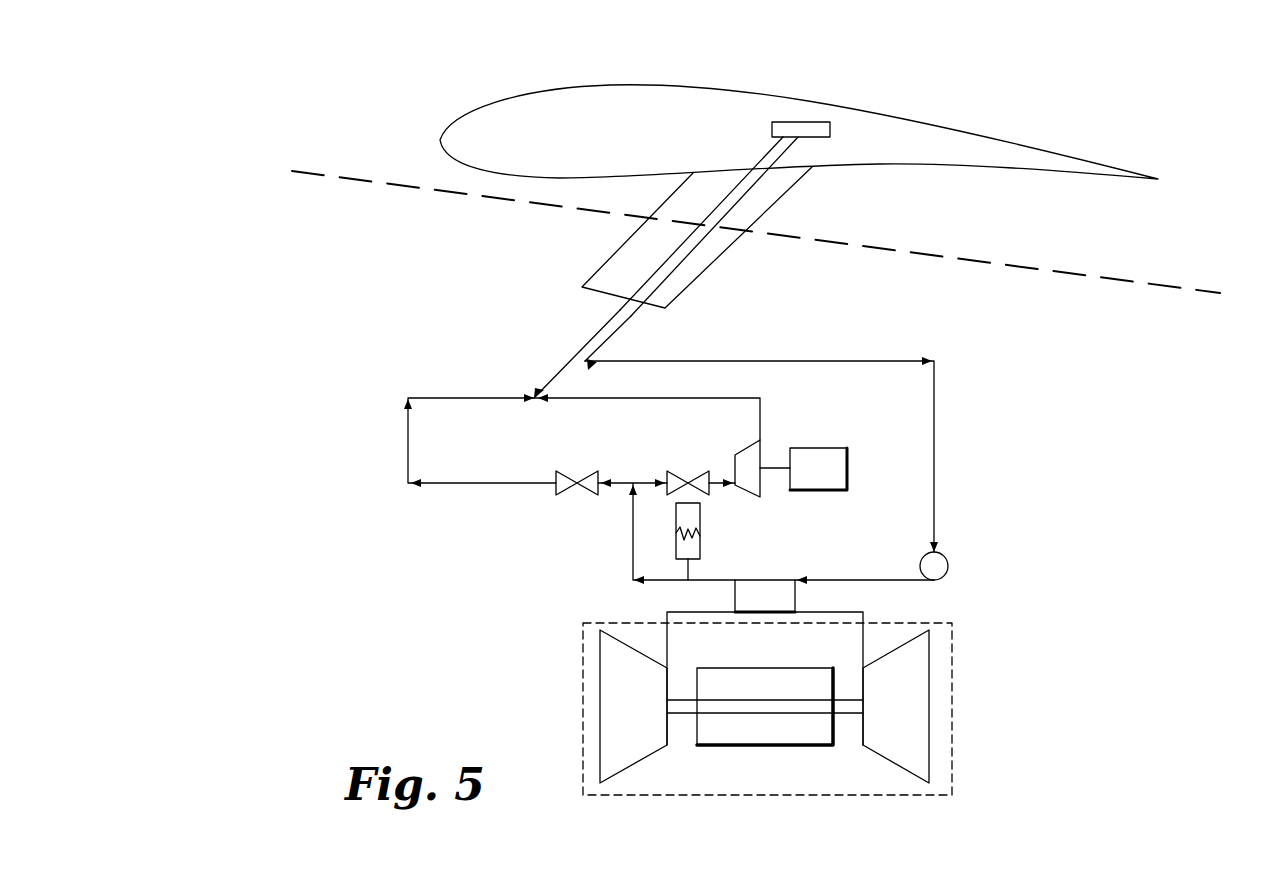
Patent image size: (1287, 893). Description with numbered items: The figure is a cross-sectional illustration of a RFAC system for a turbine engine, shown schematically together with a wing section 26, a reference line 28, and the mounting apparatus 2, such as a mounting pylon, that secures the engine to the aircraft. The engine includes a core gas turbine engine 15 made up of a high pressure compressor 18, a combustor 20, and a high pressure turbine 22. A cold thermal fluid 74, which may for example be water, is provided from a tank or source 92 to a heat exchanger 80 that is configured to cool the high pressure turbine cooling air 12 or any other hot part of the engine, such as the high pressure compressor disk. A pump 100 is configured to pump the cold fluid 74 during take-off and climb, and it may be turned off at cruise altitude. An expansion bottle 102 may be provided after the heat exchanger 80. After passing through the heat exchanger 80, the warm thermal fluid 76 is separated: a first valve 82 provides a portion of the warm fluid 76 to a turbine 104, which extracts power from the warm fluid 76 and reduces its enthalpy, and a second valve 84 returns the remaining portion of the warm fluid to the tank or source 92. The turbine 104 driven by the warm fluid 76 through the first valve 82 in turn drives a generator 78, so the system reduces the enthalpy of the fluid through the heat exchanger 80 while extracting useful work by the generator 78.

The mounting apparatus 2 is at (608, 263).
The high pressure turbine cooling air 12 is at (864, 656).
The core gas turbine engine 15 is at (575, 663).
The high pressure compressor 18 is at (635, 767).
The combustor 20 is at (837, 747).
The high pressure turbine 22 is at (930, 640).
The airfoil / wing 26 is at (457, 118).
The reference axis 28 is at (1208, 292).
The cold thermal fluid 74 is at (742, 199).
The warm thermal fluid 76 is at (582, 345).
The generator 78 is at (848, 453).
The heat exchanger 80 is at (757, 587).
The first valve 82 is at (668, 472).
The second valve 84 is at (557, 472).
The tank or source 92 is at (822, 122).
The pump 100 is at (948, 563).
The expansion bottle 102 is at (700, 545).
The turbine 104 is at (755, 449).